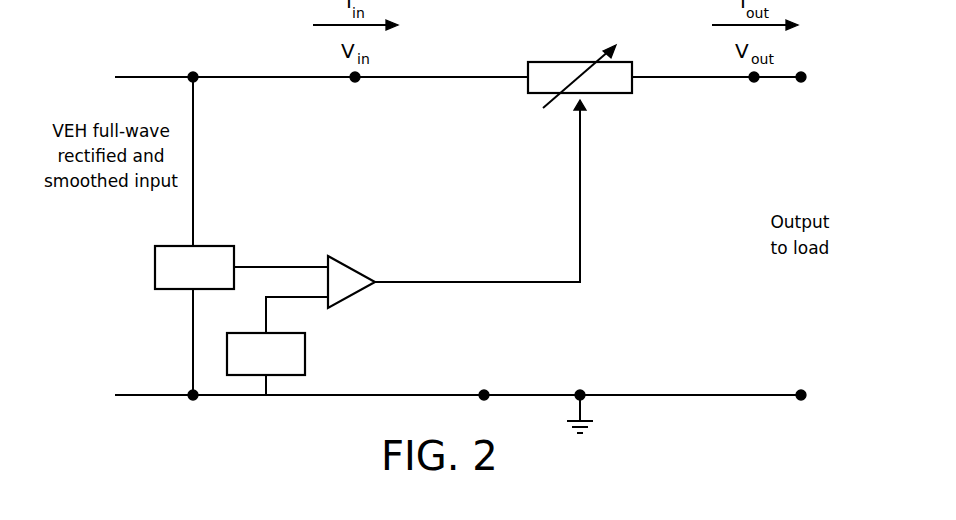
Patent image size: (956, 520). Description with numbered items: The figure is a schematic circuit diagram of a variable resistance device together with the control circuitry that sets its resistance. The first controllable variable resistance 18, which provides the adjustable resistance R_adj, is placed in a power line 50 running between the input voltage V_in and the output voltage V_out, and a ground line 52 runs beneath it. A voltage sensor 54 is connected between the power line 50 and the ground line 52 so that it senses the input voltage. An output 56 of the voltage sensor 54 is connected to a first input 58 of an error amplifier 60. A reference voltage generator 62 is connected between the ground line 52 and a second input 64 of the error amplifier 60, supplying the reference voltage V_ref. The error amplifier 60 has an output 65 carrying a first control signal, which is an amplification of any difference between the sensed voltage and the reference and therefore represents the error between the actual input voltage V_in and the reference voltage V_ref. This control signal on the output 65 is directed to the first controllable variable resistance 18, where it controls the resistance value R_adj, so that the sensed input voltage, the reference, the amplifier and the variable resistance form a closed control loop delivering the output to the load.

The power line 50 is at (468, 74).
The first controllable variable resistance 18 is at (614, 95).
The ground line 52 is at (680, 393).
The voltage sensor 54 is at (155, 257).
The output of the voltage sensor 56 is at (235, 263).
The first input of the error amplifier 58 is at (329, 255).
The error amplifier 60 is at (353, 263).
The reference voltage generator 62 is at (305, 361).
The second input of the error amplifier 64 is at (328, 307).
The output of the error amplifier 65 is at (375, 284).